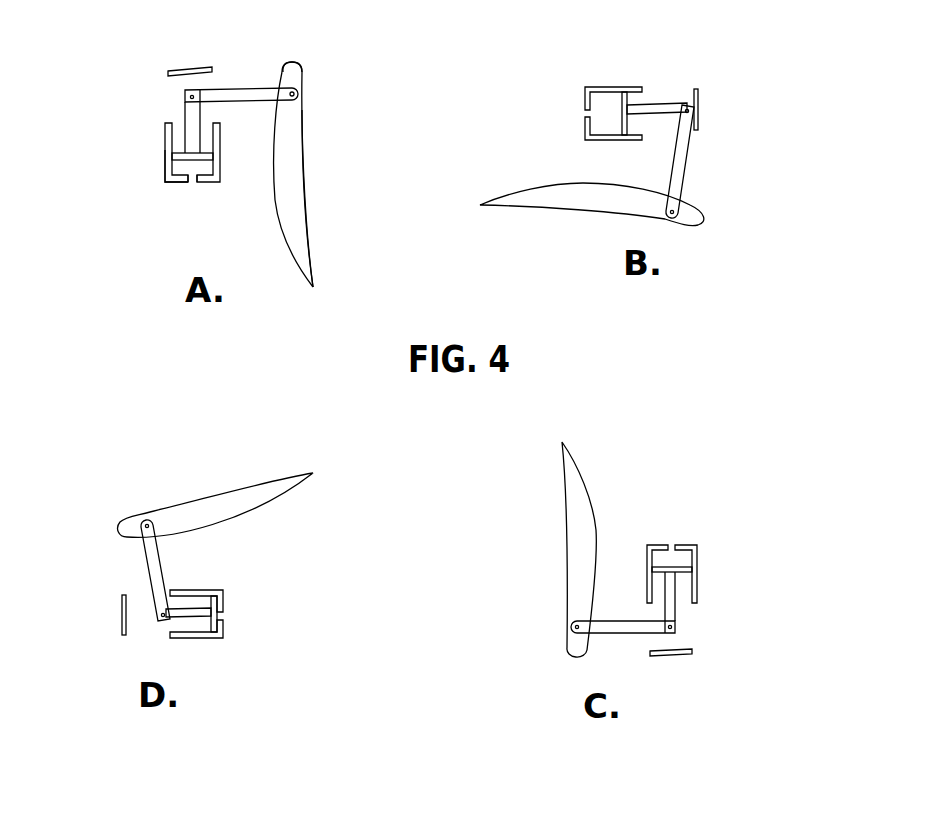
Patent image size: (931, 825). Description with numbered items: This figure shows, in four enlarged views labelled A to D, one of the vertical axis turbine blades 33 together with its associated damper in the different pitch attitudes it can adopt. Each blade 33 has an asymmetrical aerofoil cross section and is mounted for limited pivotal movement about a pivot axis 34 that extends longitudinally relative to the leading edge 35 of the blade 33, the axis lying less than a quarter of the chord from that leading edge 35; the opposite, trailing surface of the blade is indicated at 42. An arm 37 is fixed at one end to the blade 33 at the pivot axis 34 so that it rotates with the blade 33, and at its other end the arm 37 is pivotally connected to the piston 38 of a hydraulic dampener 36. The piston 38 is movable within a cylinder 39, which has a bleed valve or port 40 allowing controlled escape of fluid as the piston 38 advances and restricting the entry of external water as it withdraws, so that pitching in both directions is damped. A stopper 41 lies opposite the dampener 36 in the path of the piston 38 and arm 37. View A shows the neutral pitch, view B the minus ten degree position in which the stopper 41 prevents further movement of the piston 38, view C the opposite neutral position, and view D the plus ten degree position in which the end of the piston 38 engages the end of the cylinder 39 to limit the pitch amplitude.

The blade 33 is at (290, 147).
The pivot axis 34 is at (300, 93).
The leading edge 35 is at (292, 62).
The hydraulic dampener 36 is at (150, 153).
The arm 37 is at (232, 90).
The piston 38 is at (210, 142).
The cylinder 39 is at (163, 167).
The bleed valve or port 40 is at (183, 188).
The stopper 41 is at (165, 83).
The trailing surface of wing 42 is at (305, 178).